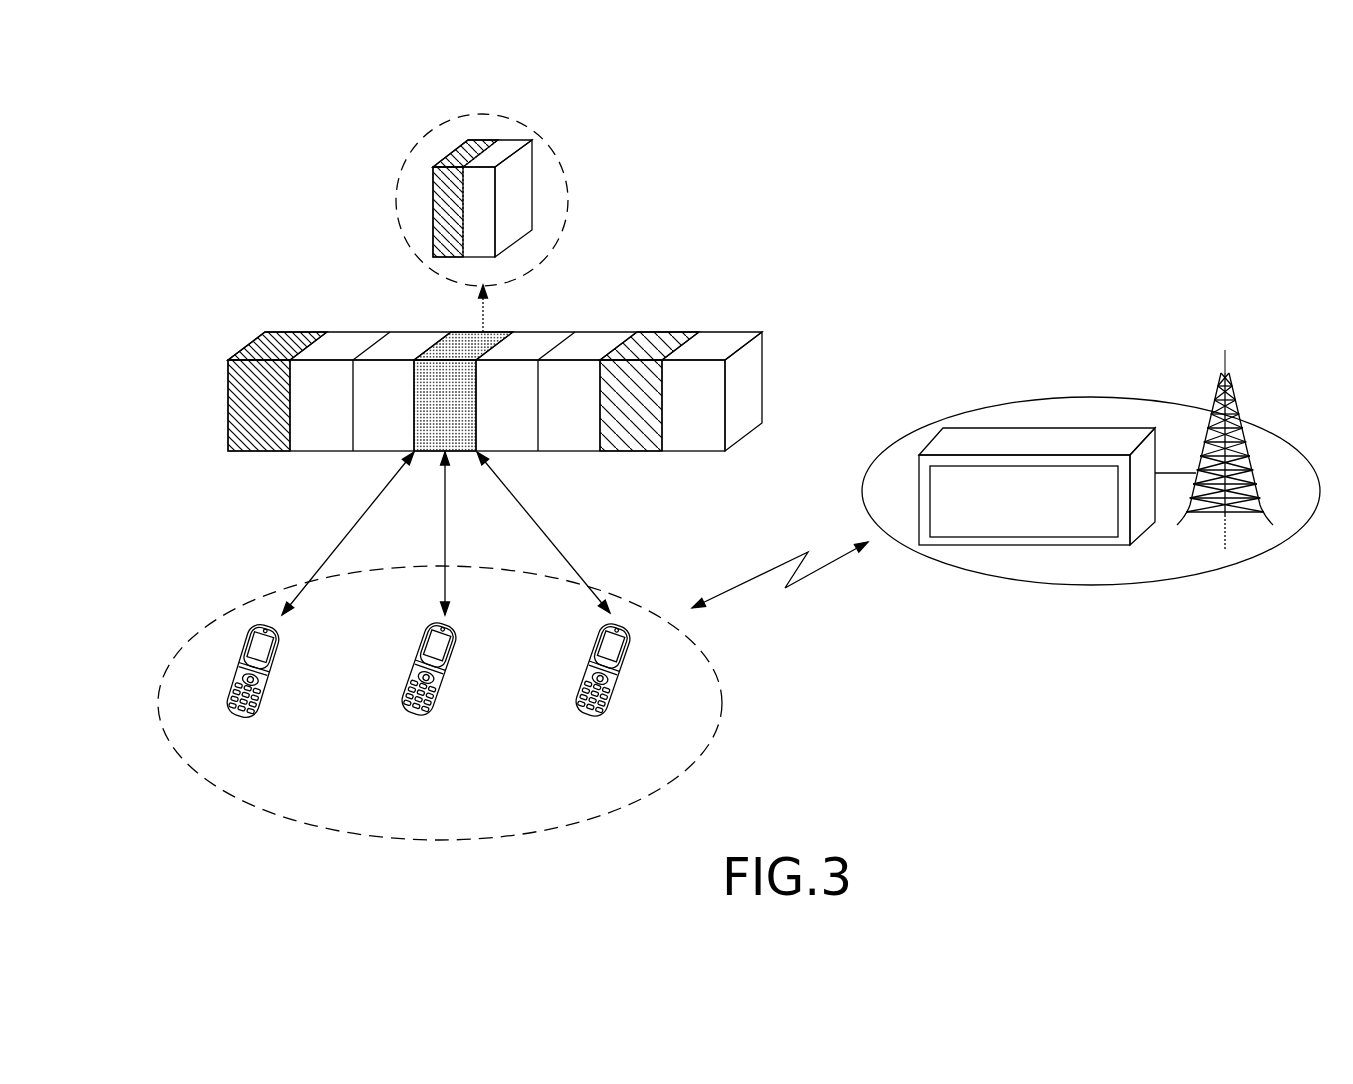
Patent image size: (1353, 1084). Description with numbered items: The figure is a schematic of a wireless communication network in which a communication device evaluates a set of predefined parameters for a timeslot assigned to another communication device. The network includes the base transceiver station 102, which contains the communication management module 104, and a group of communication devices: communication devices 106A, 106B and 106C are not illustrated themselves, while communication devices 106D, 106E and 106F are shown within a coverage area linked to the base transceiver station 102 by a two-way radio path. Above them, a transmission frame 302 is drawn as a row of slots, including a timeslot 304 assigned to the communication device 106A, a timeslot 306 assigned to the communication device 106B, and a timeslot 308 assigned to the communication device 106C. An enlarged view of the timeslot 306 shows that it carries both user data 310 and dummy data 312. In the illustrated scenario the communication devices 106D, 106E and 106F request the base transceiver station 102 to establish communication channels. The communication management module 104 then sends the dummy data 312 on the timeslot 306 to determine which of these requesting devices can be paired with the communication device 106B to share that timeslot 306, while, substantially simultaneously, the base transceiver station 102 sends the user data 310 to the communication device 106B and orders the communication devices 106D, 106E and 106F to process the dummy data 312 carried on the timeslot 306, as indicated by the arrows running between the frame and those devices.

The base transceiver station 102 is at (1091, 501).
The communication management module 104 is at (1037, 486).
The communication device 106A is at (290, 332).
The communication device 106B is at (497, 332).
The communication device 106C is at (693, 332).
The communication device 106D is at (251, 720).
The communication device 106E is at (427, 718).
The communication device 106F is at (601, 719).
The transmission frame 302 is at (572, 350).
The timeslot 304 is at (291, 350).
The timeslot 306 is at (572, 367).
The timeslot 308 is at (774, 371).
The user data 310 is at (433, 215).
The dummy data 312 is at (518, 200).